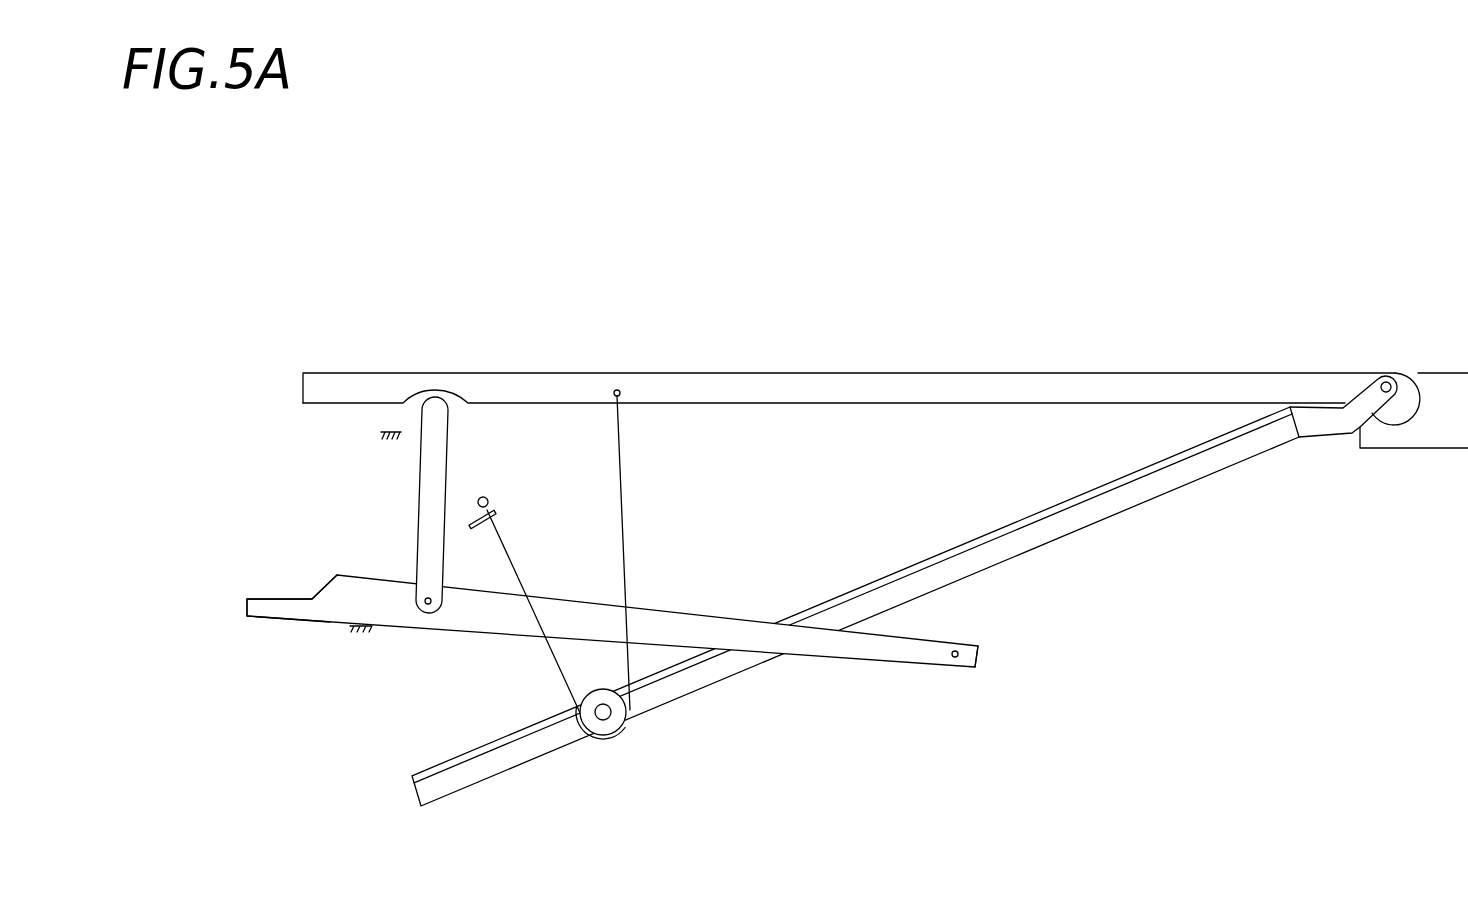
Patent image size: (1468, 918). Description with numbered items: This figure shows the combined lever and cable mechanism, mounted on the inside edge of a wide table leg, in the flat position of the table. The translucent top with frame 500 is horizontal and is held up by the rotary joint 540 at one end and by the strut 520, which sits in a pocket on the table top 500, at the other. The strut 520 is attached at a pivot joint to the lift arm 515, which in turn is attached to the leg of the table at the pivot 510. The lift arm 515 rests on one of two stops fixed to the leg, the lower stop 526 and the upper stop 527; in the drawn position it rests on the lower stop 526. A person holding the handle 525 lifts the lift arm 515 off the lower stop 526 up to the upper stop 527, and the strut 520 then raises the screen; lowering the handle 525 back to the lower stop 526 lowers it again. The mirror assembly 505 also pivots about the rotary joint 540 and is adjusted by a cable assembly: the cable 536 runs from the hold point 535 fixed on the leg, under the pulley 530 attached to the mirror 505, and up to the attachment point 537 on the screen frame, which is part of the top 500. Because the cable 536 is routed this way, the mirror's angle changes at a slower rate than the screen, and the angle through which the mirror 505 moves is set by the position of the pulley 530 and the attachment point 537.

The translucent top with frame 500 is at (884, 373).
The mirror assembly 505 is at (1087, 508).
The pivot 510 is at (957, 658).
The lift arm 515 is at (800, 646).
The strut 520 is at (418, 515).
The handle 525 is at (300, 610).
The lower stop 526 is at (370, 632).
The upper stop 527 is at (381, 433).
The pulley 530 is at (615, 725).
The hold point fixed on the leg 535 is at (490, 503).
The cable 536 is at (517, 568).
The attachment point 537 is at (617, 390).
The rotary joint 540 is at (1392, 373).